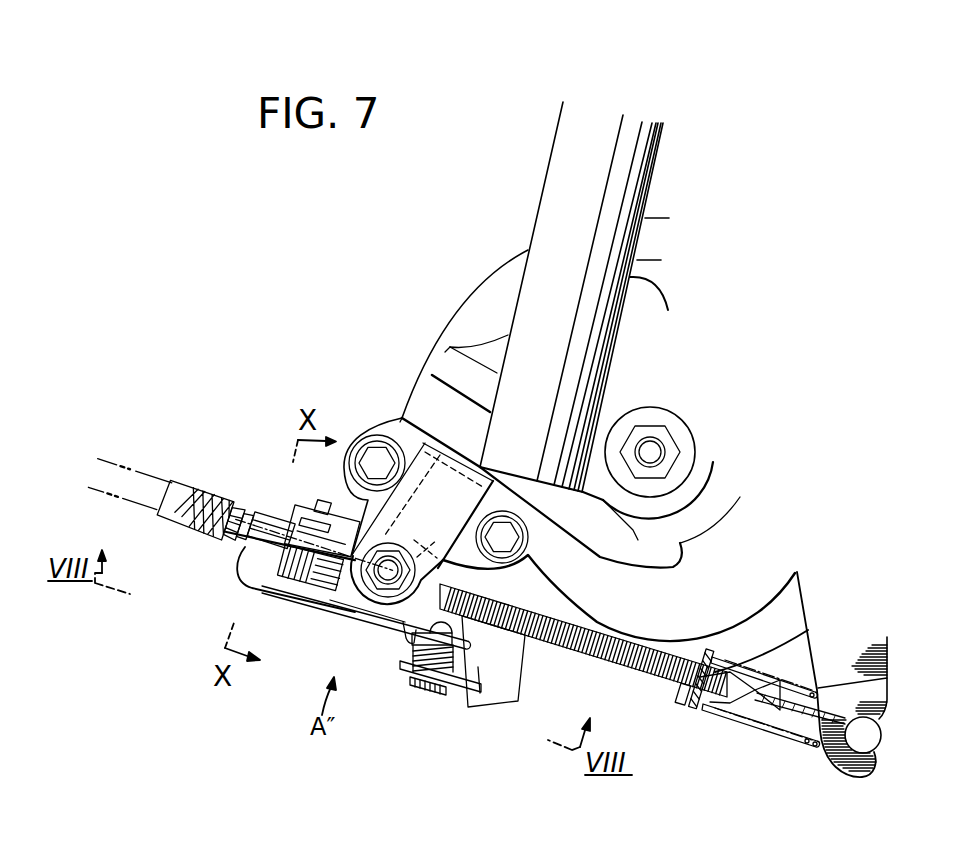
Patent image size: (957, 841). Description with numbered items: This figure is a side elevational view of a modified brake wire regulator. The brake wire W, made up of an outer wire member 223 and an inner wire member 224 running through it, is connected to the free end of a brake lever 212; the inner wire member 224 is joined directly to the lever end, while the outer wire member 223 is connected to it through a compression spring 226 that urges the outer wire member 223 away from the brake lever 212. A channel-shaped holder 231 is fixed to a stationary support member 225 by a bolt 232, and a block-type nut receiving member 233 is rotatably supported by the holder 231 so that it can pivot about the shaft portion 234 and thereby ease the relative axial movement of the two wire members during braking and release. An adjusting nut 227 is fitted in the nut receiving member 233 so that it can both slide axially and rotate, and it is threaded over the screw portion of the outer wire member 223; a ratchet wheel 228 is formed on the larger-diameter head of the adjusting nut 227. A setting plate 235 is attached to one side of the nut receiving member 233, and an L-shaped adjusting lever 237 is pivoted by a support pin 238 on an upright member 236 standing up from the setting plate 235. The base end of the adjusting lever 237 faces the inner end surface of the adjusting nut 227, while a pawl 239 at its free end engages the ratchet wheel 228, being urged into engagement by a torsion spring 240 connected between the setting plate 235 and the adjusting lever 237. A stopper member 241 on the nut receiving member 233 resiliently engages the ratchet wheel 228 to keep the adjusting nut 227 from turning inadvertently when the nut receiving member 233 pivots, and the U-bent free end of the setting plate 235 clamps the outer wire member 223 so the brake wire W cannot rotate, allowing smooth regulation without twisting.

The brake lever 212 is at (867, 687).
The outer wire member 223 is at (633, 648).
The inner wire member 224 is at (796, 706).
The stationary support member 225 is at (556, 648).
The compression spring 226 is at (735, 718).
The adjusting nut 227 is at (311, 567).
The ratchet wheel 228 is at (226, 520).
The channel-shaped holder 231 is at (440, 518).
The bolt 232 is at (508, 539).
The nut receiving member 233 is at (380, 610).
The shaft portion 234 is at (394, 568).
The setting plate 235 is at (496, 700).
The upright member 236 is at (463, 640).
The adjusting lever 237 is at (396, 634).
The support pin 238 is at (419, 690).
The pawl 239 is at (281, 579).
The torsion spring 240 is at (402, 648).
The stopper member 241 is at (324, 529).
The brake wire W is at (632, 668).